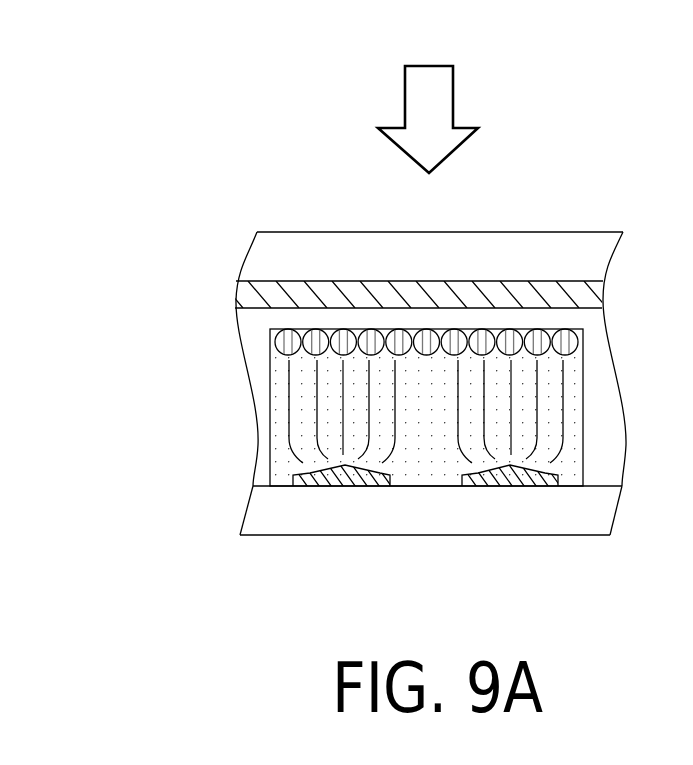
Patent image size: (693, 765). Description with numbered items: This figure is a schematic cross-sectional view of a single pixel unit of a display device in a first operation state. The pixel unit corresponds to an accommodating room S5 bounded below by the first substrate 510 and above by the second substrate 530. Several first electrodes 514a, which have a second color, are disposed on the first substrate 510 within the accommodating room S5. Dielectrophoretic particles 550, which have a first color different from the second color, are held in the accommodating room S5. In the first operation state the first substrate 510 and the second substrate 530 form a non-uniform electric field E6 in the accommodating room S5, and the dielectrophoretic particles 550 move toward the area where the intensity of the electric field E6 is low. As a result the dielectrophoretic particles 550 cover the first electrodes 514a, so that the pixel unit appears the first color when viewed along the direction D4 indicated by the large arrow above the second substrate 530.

The second substrate 530 is at (231, 250).
The first substrate 510 is at (234, 500).
The first electrodes 514a is at (343, 486).
The dielectrophoretic particles 550 is at (289, 345).
The electric field E6 is at (368, 380).
The accommodating room S5 is at (534, 380).
The direction D4 is at (455, 92).